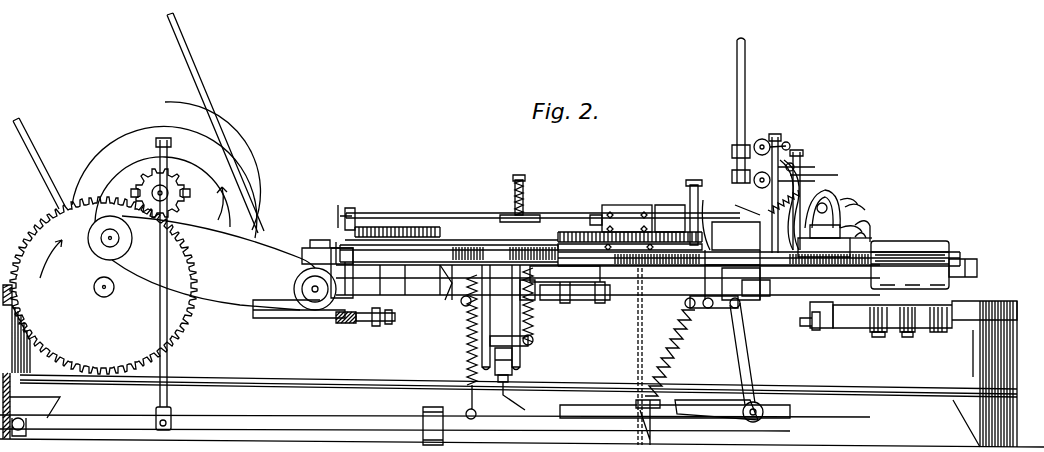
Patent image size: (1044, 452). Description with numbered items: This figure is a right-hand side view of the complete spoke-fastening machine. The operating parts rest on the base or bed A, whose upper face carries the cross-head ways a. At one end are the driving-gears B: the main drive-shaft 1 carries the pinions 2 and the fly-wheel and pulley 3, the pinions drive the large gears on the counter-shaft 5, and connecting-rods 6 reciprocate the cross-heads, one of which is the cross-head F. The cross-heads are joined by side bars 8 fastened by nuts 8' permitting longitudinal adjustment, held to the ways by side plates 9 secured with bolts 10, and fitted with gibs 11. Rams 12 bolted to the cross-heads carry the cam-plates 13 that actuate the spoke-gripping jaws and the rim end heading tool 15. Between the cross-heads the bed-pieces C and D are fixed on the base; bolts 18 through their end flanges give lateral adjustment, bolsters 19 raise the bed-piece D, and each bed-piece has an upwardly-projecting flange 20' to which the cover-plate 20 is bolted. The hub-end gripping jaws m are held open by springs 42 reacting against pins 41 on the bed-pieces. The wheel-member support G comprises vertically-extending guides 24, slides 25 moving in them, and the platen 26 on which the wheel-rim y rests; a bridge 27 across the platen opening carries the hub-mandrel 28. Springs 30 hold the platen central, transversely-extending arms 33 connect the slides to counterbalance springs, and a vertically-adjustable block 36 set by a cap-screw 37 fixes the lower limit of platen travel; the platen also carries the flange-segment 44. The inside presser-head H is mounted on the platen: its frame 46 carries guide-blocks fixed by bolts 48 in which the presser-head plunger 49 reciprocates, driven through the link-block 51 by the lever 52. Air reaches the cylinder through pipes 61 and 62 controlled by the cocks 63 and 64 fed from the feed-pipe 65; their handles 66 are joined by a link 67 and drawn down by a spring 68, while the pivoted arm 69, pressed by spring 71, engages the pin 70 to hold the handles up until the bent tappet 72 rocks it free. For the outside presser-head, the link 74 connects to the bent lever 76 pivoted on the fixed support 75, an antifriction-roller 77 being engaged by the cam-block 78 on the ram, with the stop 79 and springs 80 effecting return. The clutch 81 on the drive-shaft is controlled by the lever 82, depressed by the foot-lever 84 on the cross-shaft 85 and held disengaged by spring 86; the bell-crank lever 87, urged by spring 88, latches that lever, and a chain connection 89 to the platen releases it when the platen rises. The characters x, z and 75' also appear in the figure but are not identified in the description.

The main drive-shaft 1 is at (150, 185).
The pinions 2 is at (180, 186).
The fly-wheel and pulley 3 is at (133, 131).
The counter-shaft 5 is at (250, 185).
The connecting-rods 6 is at (212, 263).
The side bars 8 is at (824, 247).
The nuts 8' is at (651, 257).
The side plates 9 is at (330, 318).
The bolts 10 is at (900, 335).
The gibs 11 is at (356, 318).
The rams 12 is at (345, 288).
The cam-plates 13 is at (810, 247).
The rim end heading tool 15 is at (608, 278).
The bolts 18 is at (587, 301).
The bolsters 19 is at (756, 288).
The cover-plate 20 is at (558, 232).
The upwardly-projecting flange 20' is at (435, 285).
The vertically-extending guides 24 is at (512, 358).
The slides 25 is at (501, 317).
The platen 26 is at (650, 246).
The bridge 27 is at (529, 207).
The hub-mandrel 28 is at (525, 180).
The springs 30 is at (532, 300).
The transversely-extending arms 33 is at (533, 339).
The vertically-adjustable block 36 is at (518, 377).
The cap-screw 37 is at (514, 396).
The upwardly-projecting pins 41 is at (470, 300).
The springs 42 is at (470, 320).
The flange-segment 44 is at (685, 212).
The presser-head frame 46 is at (625, 207).
The bolts 48 is at (627, 218).
The presser-head plunger 49 is at (592, 208).
The link-block 51 is at (414, 280).
The lever 52 is at (534, 316).
The pipe 61 is at (802, 164).
The pipe 62 is at (800, 176).
The three-way cock 63 is at (773, 136).
The cock 64 is at (757, 176).
The feed-pipe 65 is at (745, 81).
The handle 66 is at (784, 138).
The link 67 is at (792, 142).
The spring 68 is at (772, 201).
The pivotally-mounted arm 69 is at (794, 191).
The pin 70 is at (820, 172).
The spring 71 is at (732, 271).
The bent tappet 72 is at (851, 218).
The link 74 is at (736, 224).
The fixed support 75 is at (829, 203).
The arm 75' is at (712, 212).
The bent lever 76 is at (855, 196).
The antifriction-roller 77 is at (825, 225).
The cam-block 78 is at (870, 231).
The stop 79 is at (873, 224).
The springs 80 is at (745, 201).
The clutch 81 is at (170, 170).
The lever 82 is at (364, 420).
The foot-lever 84 is at (735, 412).
The cross-shaft 85 is at (170, 357).
The spring 86 is at (465, 358).
The bell-crank lever 87 is at (651, 422).
The spring 88 is at (674, 358).
The chain connection 89 is at (638, 341).
The base or bed A is at (918, 397).
The driving-gears B is at (103, 285).
The bed-piece C is at (425, 321).
The bed-piece D is at (714, 293).
The cross-head F is at (623, 260).
The wheel-member support G is at (483, 201).
The inside presser-head H is at (667, 205).
The cross-head ways a is at (956, 293).
The hub-end spoke-gripping jaws m is at (616, 278).
The spring arm x is at (545, 212).
The wheel-rim y is at (368, 213).
The rail z is at (388, 218).